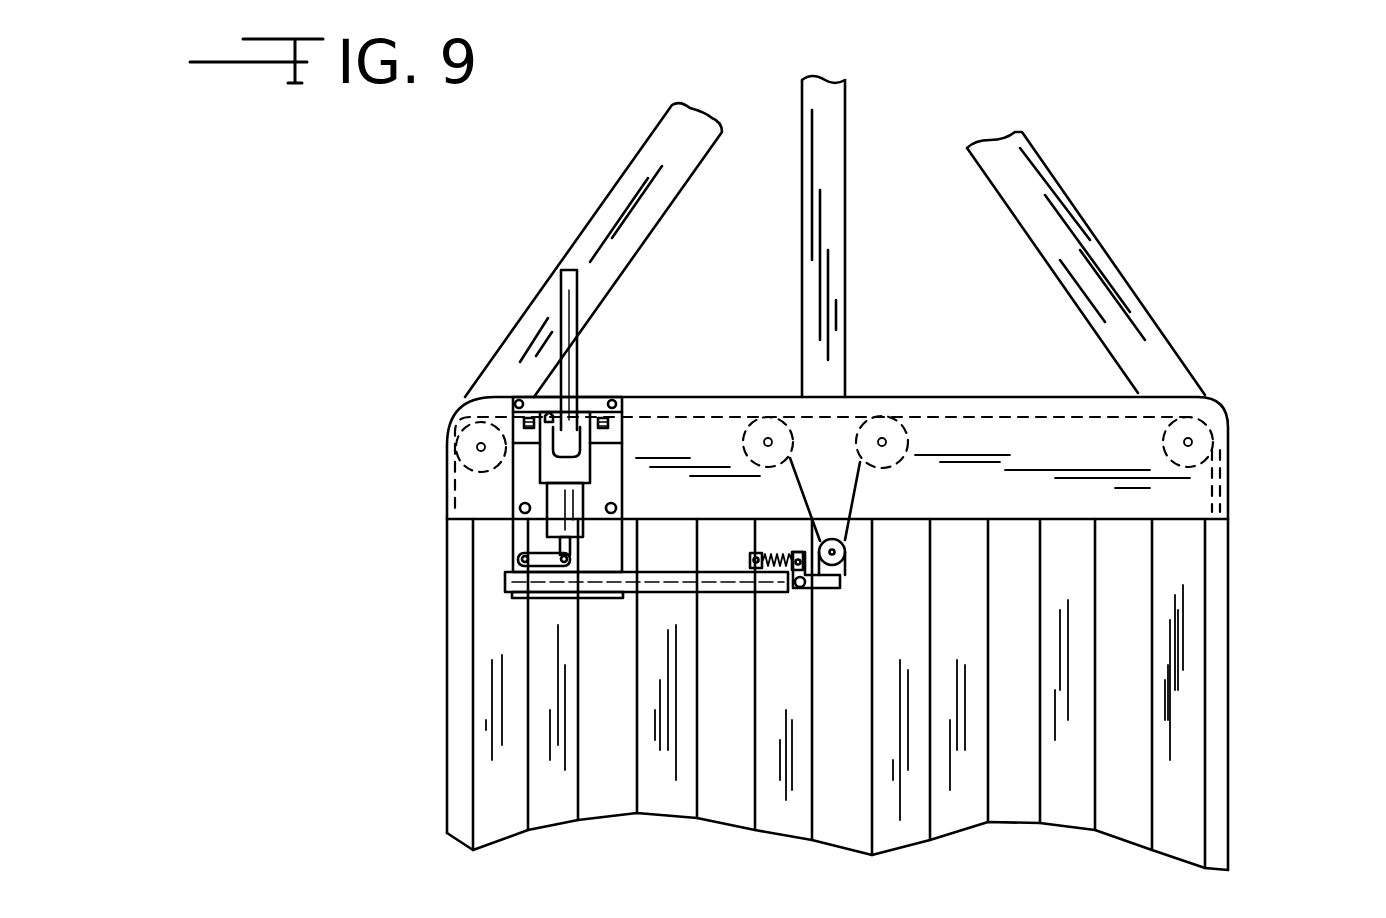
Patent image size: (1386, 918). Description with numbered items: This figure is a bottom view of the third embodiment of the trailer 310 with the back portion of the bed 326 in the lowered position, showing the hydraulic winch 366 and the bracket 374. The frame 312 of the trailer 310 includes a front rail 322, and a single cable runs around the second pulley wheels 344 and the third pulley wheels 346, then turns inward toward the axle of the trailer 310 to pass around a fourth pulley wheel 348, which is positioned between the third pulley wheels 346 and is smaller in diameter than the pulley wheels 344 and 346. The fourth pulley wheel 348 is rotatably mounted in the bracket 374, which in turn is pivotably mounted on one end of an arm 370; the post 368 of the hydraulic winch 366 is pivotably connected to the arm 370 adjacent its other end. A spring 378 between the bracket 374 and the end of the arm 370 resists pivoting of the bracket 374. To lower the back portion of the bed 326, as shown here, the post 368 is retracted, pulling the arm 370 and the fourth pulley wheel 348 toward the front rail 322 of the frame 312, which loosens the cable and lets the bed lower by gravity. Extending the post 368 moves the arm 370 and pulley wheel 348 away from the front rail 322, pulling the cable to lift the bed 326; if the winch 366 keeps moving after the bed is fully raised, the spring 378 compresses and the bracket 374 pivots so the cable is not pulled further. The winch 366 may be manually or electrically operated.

The trailer 310 is at (938, 106).
The frame 312 is at (1227, 603).
The front rail 322 is at (1222, 412).
The back portion of the bed 326 is at (1182, 690).
The second pulley wheels 344 is at (1228, 442).
The third pulley wheels 346 is at (885, 420).
The fourth pulley wheel 348 is at (846, 552).
The hydraulic winch 366 is at (590, 398).
The post 368 is at (558, 552).
The arm 370 is at (510, 586).
The bracket 374 is at (806, 588).
The spring 378 is at (790, 555).